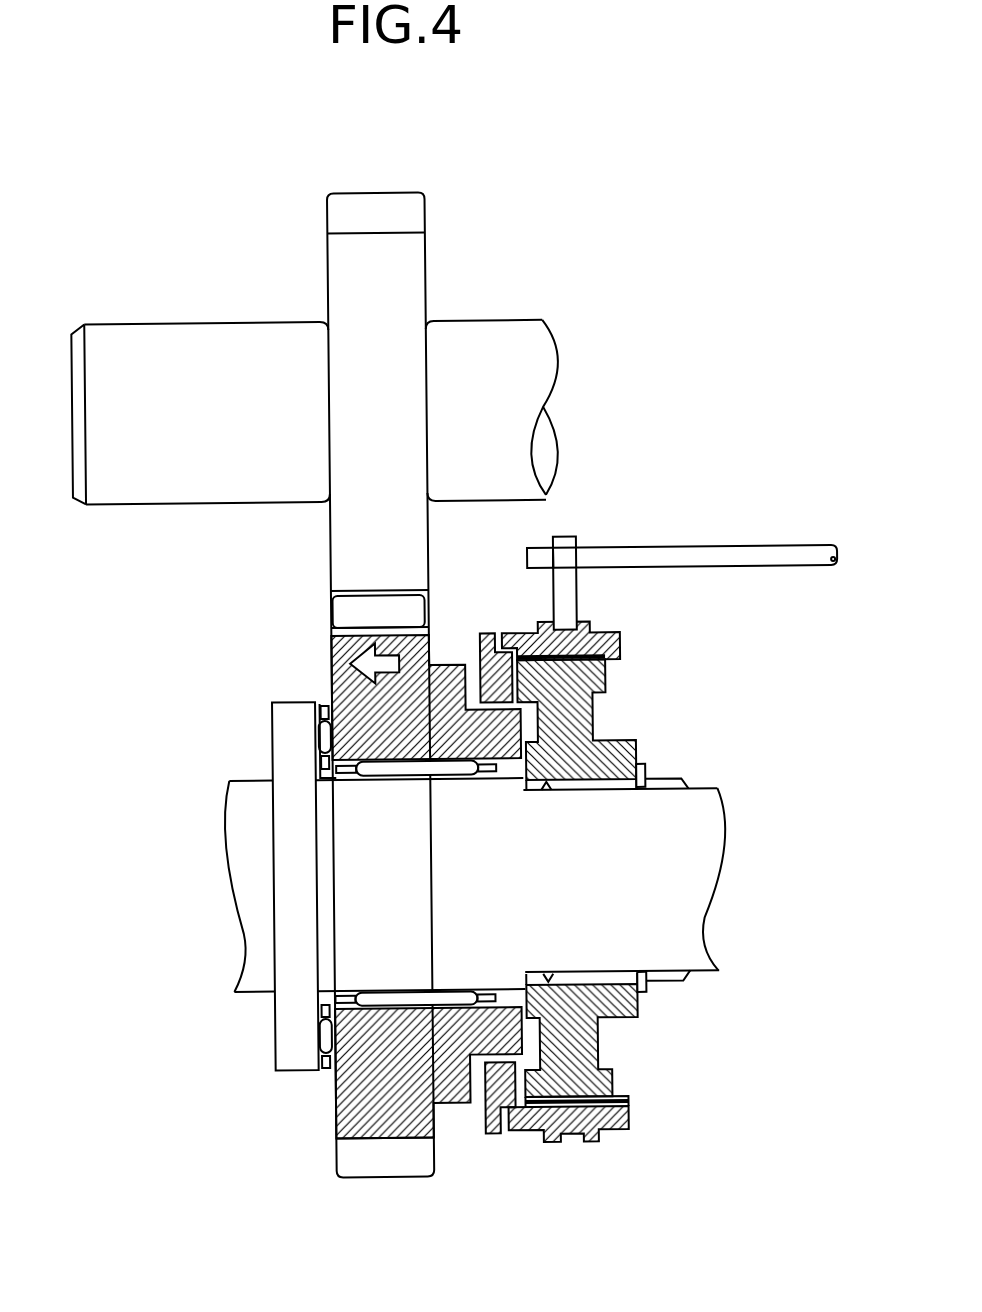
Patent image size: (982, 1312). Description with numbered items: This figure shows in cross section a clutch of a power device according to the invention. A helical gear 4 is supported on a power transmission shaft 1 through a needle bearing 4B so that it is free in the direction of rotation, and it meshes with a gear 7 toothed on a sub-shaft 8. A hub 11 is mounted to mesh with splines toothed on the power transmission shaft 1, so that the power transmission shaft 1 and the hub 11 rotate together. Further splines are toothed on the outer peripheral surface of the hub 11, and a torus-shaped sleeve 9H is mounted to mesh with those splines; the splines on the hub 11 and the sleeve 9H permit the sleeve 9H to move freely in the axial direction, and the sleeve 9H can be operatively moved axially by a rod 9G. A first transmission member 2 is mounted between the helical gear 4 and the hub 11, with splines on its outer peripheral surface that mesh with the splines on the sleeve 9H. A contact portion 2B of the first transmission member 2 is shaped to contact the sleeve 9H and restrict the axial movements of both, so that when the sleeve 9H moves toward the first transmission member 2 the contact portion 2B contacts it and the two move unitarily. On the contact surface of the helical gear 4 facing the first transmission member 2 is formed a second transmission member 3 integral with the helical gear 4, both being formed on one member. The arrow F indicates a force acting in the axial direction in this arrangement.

The power transmission shaft 1 is at (245, 778).
The first transmission member 2 is at (487, 847).
The contact portion 2B is at (491, 634).
The second transmission member 3 is at (427, 824).
The helical gear 4 is at (332, 699).
The needle bearing 4B is at (398, 770).
The gear 7 is at (332, 556).
The sub-shaft 8 is at (193, 321).
The rod 9G is at (716, 573).
The sleeve 9H is at (624, 649).
The hub 11 is at (581, 770).
The pressing force F is at (389, 658).